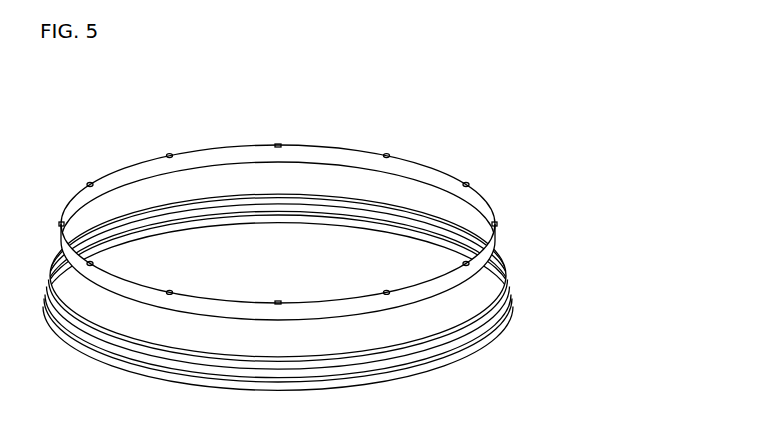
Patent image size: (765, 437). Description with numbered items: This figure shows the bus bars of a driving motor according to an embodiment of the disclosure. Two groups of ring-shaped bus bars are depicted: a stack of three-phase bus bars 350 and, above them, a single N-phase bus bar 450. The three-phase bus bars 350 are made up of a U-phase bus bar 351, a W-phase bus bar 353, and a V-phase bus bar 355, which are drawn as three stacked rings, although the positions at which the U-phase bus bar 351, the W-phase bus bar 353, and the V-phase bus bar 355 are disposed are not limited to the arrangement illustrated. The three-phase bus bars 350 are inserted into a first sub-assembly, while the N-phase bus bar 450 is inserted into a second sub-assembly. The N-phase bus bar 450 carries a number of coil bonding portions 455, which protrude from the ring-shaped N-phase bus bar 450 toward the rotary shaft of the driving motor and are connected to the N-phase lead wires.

The three-phase bus bars 350 is at (348, 292).
The U-phase bus bar 351 is at (509, 327).
The W-phase bus bar 353 is at (513, 307).
The V-phase bus bar 355 is at (511, 284).
The N-phase bus bar 450 is at (278, 201).
The coil bonding portions 455 is at (385, 155).